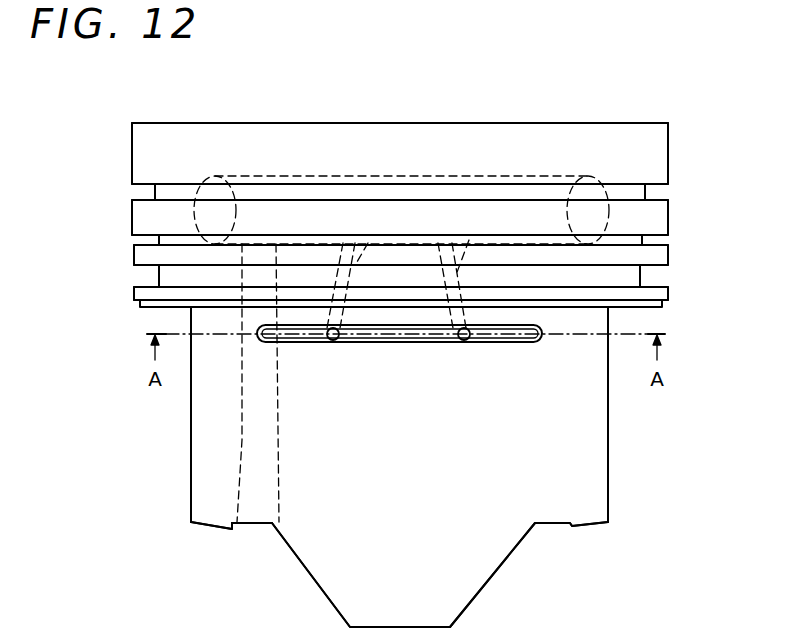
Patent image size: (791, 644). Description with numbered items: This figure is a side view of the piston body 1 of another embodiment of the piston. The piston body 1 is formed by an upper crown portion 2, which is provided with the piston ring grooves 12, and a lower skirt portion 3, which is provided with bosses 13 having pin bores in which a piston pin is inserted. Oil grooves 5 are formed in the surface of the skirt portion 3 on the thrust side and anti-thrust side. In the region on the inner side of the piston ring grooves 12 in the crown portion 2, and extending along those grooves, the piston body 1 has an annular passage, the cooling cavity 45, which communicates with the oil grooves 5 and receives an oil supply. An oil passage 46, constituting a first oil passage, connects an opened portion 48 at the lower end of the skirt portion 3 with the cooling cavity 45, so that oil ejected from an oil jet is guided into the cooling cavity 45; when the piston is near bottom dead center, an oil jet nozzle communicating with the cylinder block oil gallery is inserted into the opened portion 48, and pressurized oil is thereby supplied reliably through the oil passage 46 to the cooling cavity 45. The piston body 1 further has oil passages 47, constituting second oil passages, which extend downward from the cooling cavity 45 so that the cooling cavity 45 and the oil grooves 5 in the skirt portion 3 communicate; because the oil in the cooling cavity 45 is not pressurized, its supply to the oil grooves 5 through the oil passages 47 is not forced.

The piston body 1 is at (572, 123).
The crown portion 2 is at (633, 160).
The piston ring grooves 12 is at (663, 243).
The skirt portion 3 is at (548, 421).
The bosses 13 is at (198, 418).
The oil grooves 5 is at (369, 341).
The cooling cavity 45 is at (285, 212).
The oil passage 46 is at (252, 443).
The oil passages 47 is at (368, 243).
The opened portion 48 is at (252, 525).